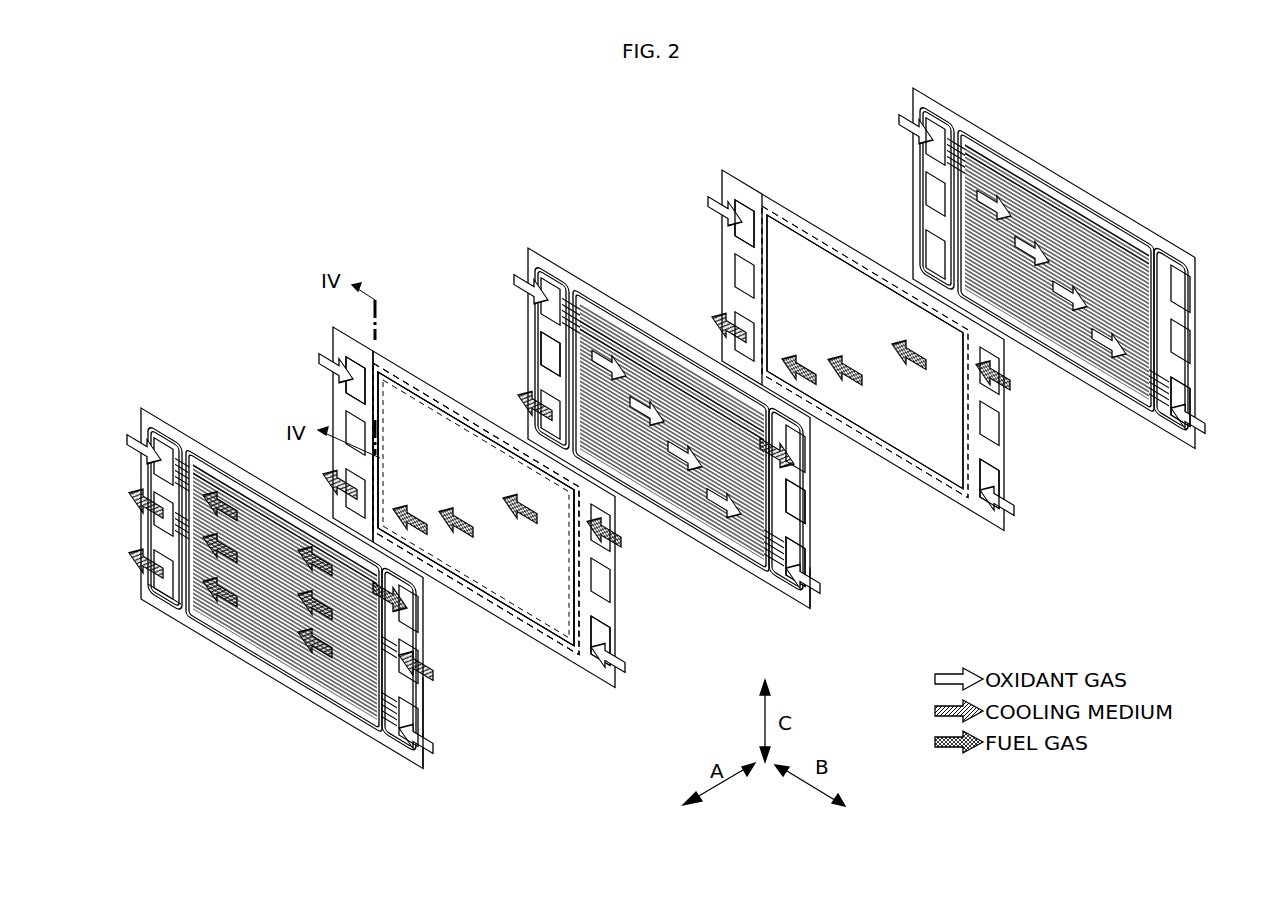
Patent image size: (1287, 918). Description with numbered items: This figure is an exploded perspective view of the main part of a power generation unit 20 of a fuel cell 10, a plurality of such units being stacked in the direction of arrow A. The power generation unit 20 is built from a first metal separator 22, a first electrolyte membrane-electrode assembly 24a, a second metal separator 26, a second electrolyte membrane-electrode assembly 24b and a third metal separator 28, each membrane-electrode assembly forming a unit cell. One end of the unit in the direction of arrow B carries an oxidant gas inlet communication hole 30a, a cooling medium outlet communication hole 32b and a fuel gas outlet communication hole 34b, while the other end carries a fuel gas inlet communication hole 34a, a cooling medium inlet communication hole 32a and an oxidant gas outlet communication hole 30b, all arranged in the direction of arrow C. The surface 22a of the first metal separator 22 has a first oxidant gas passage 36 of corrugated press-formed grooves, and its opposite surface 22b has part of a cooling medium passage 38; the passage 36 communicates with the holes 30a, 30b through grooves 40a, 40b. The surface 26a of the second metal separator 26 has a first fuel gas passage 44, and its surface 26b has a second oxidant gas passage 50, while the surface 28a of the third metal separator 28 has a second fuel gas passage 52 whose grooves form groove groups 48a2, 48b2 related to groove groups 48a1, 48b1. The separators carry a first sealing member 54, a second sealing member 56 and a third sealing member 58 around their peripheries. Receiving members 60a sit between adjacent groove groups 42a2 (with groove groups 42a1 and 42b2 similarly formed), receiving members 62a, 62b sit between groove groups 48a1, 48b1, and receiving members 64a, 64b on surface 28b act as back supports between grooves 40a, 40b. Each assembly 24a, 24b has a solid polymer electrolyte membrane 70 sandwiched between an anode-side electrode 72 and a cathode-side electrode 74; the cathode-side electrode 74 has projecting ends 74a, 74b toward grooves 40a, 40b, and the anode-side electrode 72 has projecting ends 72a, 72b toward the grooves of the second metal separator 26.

The fuel cell 10 is at (754, 86).
The power generation unit 20 is at (792, 86).
The first metal separator 22 is at (913, 98).
The surface of the first metal separator 22a is at (1196, 430).
The surface of the first metal separator 22b is at (1195, 404).
The first electrolyte membrane-electrode assembly 24a is at (722, 170).
The second electrolyte membrane-electrode assembly 24b is at (333, 327).
The second metal separator 26 is at (528, 248).
The surface of the second metal separator 26a is at (812, 568).
The surface of the second metal separator 26b is at (812, 598).
The third metal separator 28 is at (141, 408).
The surface of the third metal separator 28a is at (426, 730).
The surface of the third metal separator 28b is at (426, 752).
The oxidant gas inlet communication hole 30a is at (935, 130).
The oxidant gas outlet communication hole 30b is at (401, 762).
The cooling medium inlet communication hole 32a is at (410, 650).
The cooling medium outlet communication hole 32b is at (152, 488).
The fuel gas inlet communication hole 34a is at (410, 620).
The fuel gas outlet communication hole 34b is at (152, 550).
The first oxidant gas passage 36 is at (1000, 178).
The cooling medium passage 38 is at (1043, 173).
The grooves 40a is at (935, 170).
The grooves 40b is at (1182, 380).
The bridge section (connecting channels) 42a1 is at (952, 134).
The groove groups 42a2 is at (567, 290).
The groove groups 42b2 is at (770, 575).
The first fuel gas passage 44 is at (655, 330).
The groove groups 48a1 is at (805, 440).
The groove groups 48a2 is at (400, 580).
The groove groups 48b1 is at (505, 385).
The groove groups 48b2 is at (160, 602).
The second oxidant gas passage 50 is at (615, 318).
The second fuel gas passage 52 is at (265, 472).
The first sealing member 54 is at (1088, 192).
The second sealing member 56 is at (680, 345).
The third sealing member 58 is at (300, 486).
The receiving members 60a is at (535, 283).
The receiving members 62a is at (786, 430).
The receiving members 62b is at (545, 440).
The receiving members 64a is at (181, 428).
The receiving members 64b is at (405, 702).
The solid polymer electrolyte membrane 70 is at (515, 640).
The anode-side electrode 72 is at (503, 588).
The projecting end 72a is at (990, 383).
The projecting end 72b is at (762, 357).
The cathode-side electrode 74 is at (528, 616).
The projecting end 74a is at (735, 240).
The projecting end 74b is at (951, 500).